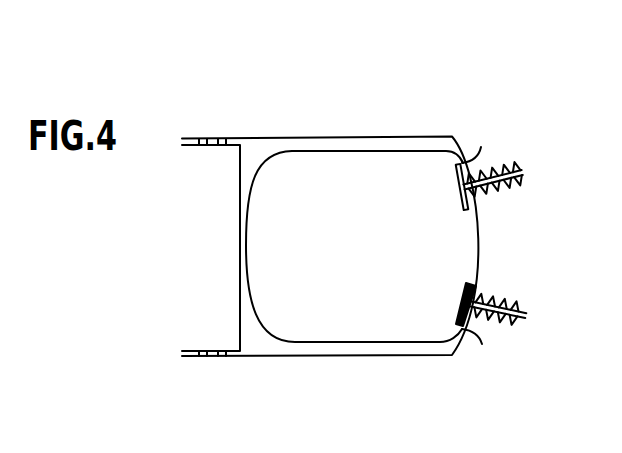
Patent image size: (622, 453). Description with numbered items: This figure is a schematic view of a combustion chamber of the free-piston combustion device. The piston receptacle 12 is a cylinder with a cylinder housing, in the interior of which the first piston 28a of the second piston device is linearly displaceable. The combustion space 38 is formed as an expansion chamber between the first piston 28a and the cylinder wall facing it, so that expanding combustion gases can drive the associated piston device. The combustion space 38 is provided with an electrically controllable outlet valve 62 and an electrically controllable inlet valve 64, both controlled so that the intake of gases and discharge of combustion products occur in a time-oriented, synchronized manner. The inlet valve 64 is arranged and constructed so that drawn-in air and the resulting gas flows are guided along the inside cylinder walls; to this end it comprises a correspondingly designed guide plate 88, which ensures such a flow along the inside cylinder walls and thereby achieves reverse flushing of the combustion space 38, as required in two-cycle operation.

The piston receptacle 12 is at (263, 137).
The first piston 28a is at (220, 325).
The combustion space 38 is at (378, 350).
The outlet valve 62 is at (524, 124).
The inlet valve 64 is at (525, 303).
The guide plate 88 is at (478, 281).